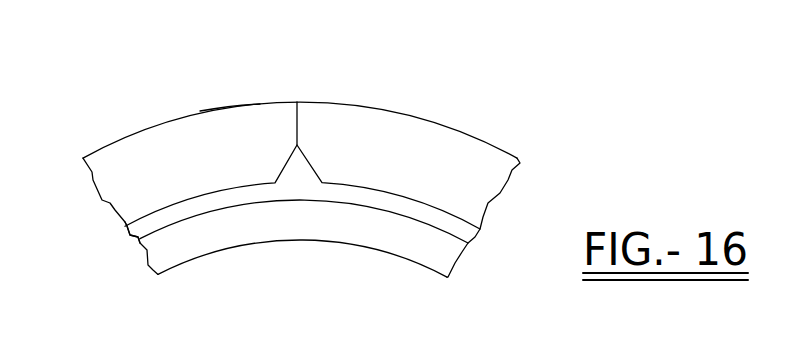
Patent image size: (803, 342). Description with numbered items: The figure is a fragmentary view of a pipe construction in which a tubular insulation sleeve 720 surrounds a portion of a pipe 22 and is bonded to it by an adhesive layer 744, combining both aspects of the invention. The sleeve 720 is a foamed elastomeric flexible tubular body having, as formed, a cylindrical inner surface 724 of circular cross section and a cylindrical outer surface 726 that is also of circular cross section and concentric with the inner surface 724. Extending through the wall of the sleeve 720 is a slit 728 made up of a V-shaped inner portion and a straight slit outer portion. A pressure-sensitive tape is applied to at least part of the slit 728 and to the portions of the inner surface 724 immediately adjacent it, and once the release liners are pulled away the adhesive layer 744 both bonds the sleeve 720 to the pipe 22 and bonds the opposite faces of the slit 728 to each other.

The sleeve 720 is at (454, 127).
The inner surface 724 is at (142, 223).
The outer surface 726 is at (228, 108).
The slit 728 is at (297, 92).
The adhesive layer 744 is at (262, 195).
The pipe 22 is at (323, 229).